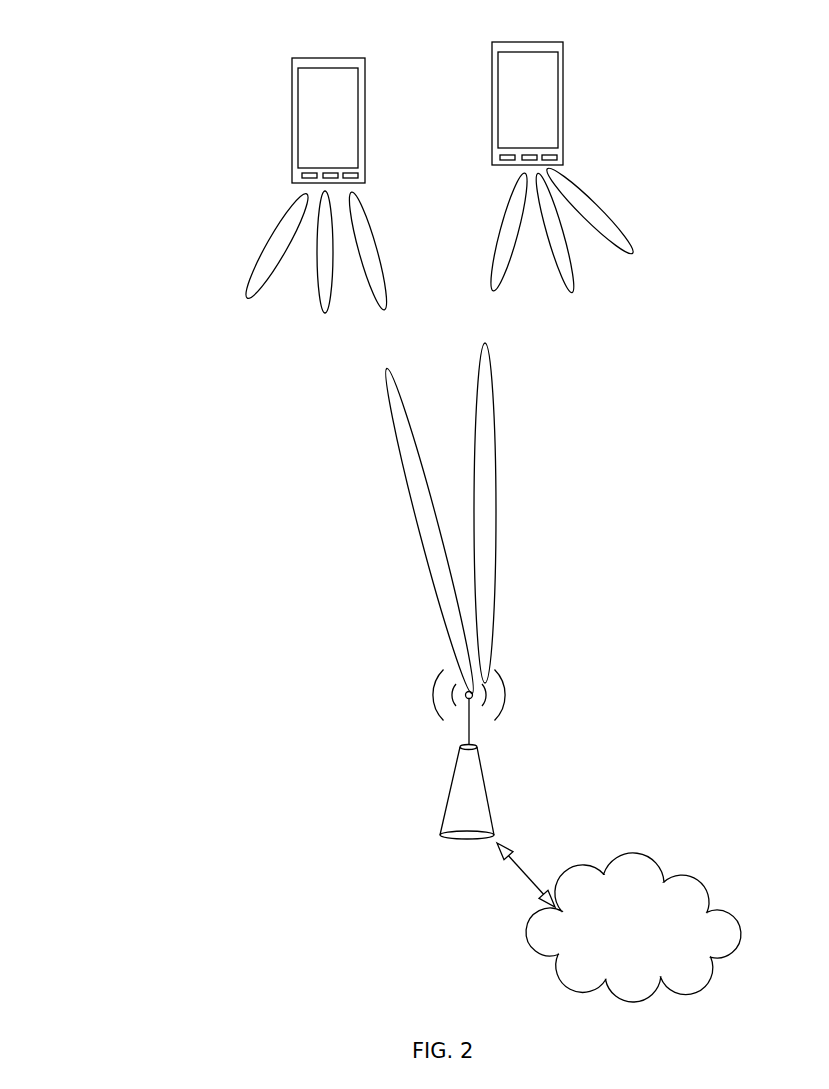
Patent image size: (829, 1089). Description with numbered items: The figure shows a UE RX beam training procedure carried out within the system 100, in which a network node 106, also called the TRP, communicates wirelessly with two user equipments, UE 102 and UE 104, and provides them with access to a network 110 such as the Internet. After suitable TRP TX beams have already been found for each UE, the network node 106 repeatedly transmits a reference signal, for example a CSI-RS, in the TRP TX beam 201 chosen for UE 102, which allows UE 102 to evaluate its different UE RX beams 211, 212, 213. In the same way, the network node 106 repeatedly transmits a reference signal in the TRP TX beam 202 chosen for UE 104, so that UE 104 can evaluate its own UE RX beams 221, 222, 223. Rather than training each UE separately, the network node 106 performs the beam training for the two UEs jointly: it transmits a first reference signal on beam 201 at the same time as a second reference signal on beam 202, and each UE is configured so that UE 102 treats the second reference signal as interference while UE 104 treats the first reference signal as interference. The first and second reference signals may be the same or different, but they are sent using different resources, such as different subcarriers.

The system 100 is at (133, 85).
The UE 102 is at (363, 125).
The UE 104 is at (557, 120).
The network node 106 is at (488, 803).
The network 110 is at (700, 887).
The TRP TX beam 201 is at (422, 535).
The TRP TX beam 202 is at (500, 510).
The UE RX beam 211 is at (248, 288).
The UE RX beam 212 is at (320, 288).
The UE RX beam 213 is at (372, 297).
The UE RX beam 221 is at (502, 247).
The UE RX beam 222 is at (552, 260).
The UE RX beam 223 is at (612, 213).